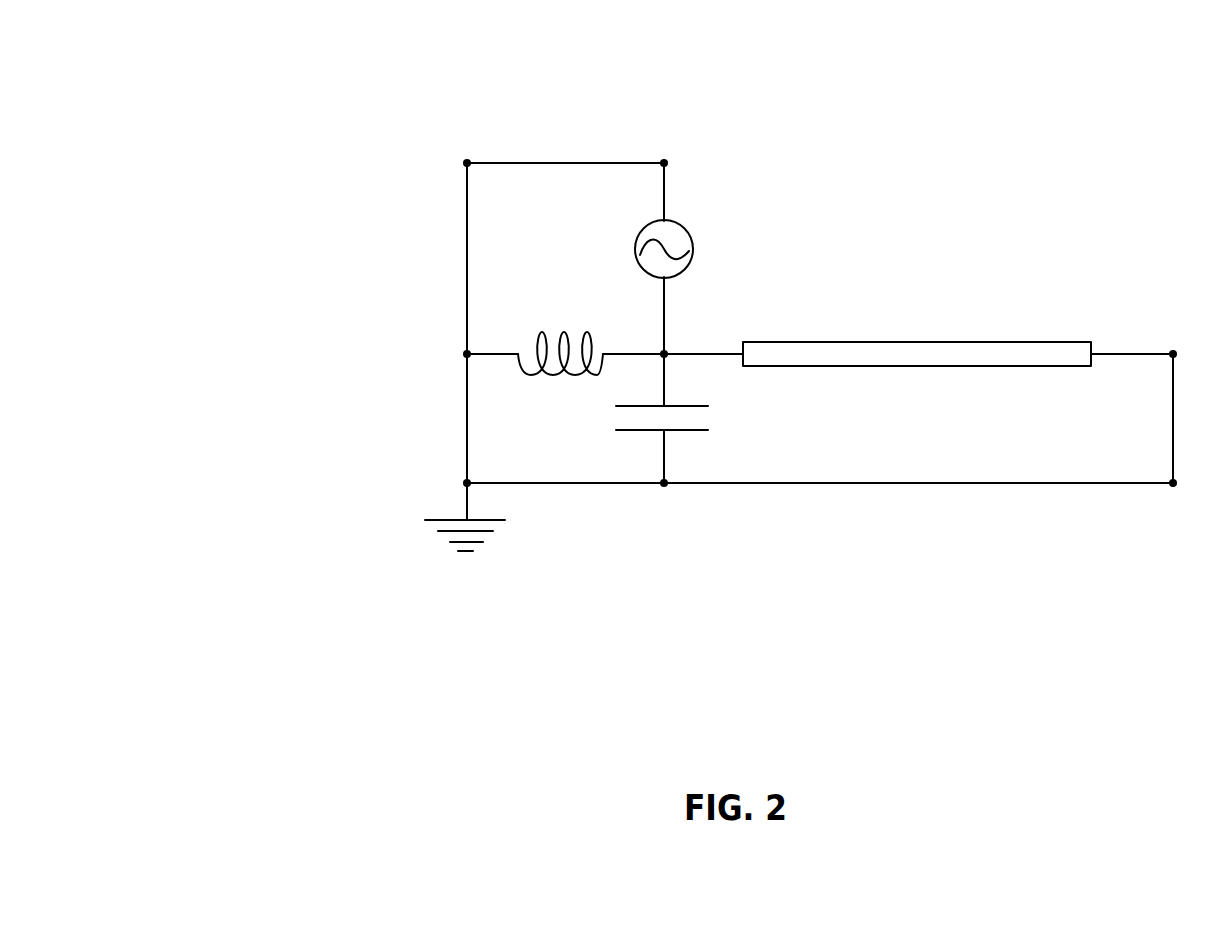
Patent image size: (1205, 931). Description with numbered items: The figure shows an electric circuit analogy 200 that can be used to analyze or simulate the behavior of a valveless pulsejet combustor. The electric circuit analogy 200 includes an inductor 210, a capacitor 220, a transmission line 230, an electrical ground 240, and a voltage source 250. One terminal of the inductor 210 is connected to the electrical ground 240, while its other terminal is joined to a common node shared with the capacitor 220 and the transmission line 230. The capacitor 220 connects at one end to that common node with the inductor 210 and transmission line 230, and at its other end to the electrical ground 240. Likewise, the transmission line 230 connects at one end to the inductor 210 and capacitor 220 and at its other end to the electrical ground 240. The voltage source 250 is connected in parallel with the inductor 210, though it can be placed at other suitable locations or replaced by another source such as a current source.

The electric circuit analogy 200 is at (267, 170).
The inductor 210 is at (537, 337).
The capacitor 220 is at (685, 430).
The transmission line 230 is at (816, 342).
The electrical ground 240 is at (430, 520).
The voltage source 250 is at (683, 220).